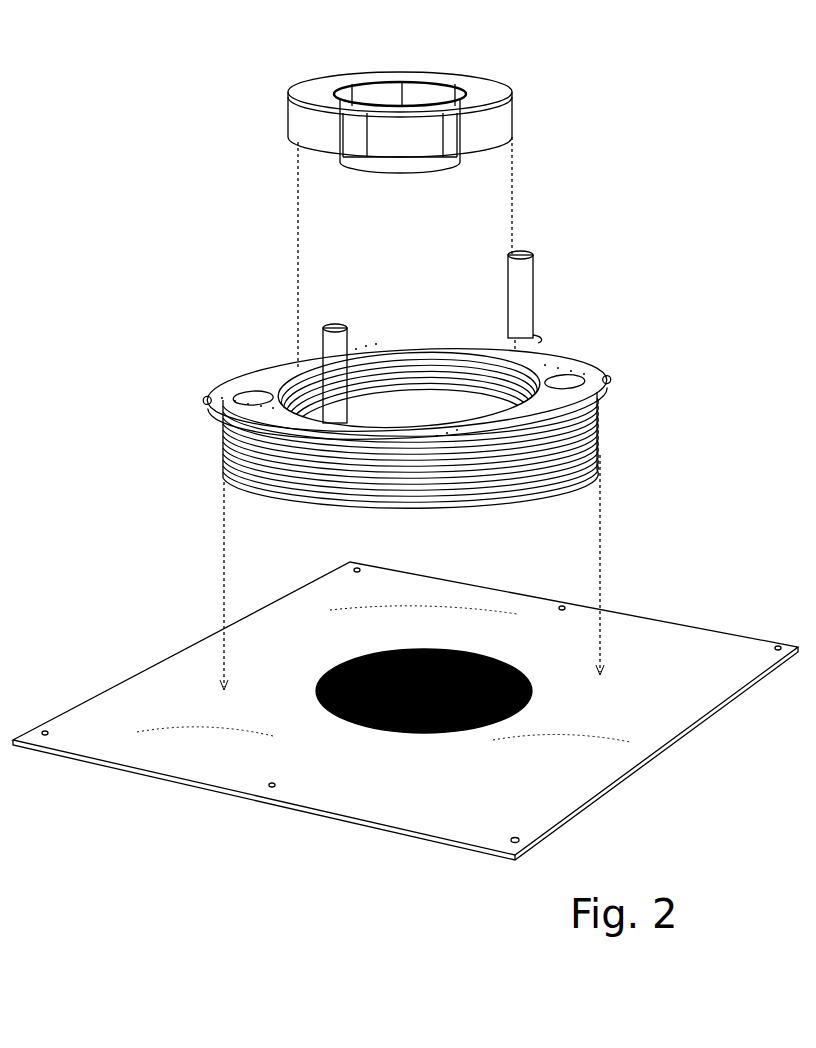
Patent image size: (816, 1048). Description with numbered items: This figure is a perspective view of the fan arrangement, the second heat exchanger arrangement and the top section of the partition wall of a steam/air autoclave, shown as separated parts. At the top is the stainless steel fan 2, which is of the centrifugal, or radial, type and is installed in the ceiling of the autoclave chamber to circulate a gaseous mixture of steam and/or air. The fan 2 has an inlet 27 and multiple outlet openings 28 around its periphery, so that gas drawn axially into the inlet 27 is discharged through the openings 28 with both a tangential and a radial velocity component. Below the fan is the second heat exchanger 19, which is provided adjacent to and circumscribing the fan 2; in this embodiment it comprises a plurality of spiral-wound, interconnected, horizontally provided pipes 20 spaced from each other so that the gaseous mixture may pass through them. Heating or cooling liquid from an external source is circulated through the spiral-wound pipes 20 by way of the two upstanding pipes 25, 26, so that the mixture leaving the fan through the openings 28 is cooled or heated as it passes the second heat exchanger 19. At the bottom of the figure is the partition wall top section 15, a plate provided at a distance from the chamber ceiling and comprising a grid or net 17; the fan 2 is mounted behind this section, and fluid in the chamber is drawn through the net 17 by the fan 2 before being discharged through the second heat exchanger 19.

The fan 2 is at (315, 90).
The partition wall top section 15 is at (223, 768).
The net 17 is at (417, 733).
The second heat exchanger 19 is at (268, 358).
The spiral-wounded pipes 20 is at (593, 443).
The pipe 25 is at (343, 346).
The pipe 26 is at (523, 283).
The inlet 27 is at (400, 173).
The outlet openings 28 is at (358, 120).